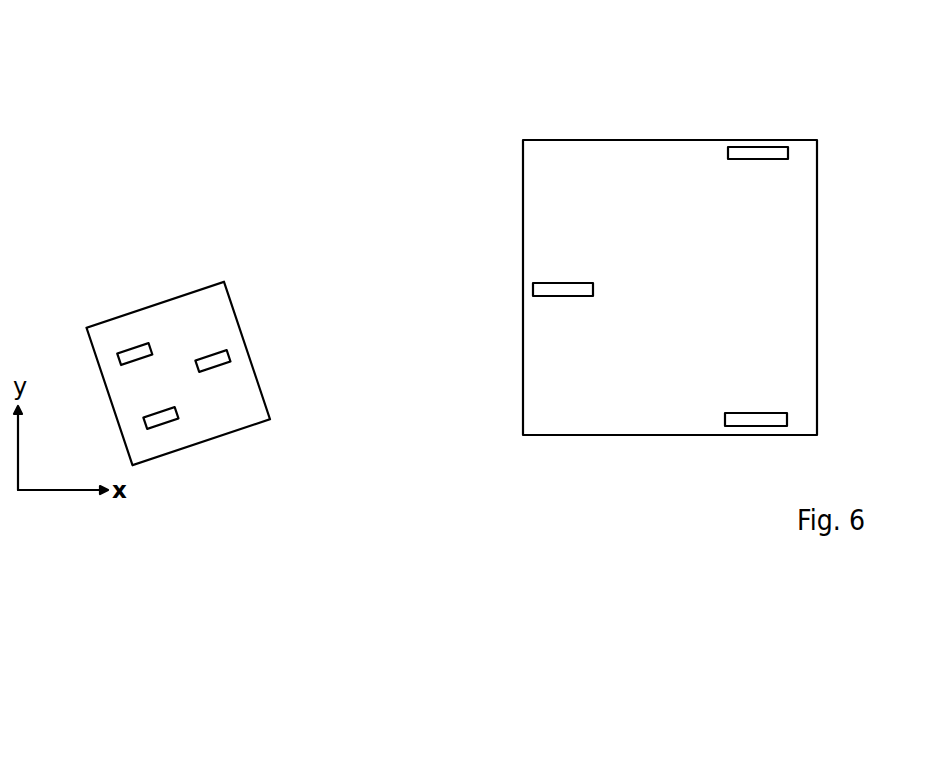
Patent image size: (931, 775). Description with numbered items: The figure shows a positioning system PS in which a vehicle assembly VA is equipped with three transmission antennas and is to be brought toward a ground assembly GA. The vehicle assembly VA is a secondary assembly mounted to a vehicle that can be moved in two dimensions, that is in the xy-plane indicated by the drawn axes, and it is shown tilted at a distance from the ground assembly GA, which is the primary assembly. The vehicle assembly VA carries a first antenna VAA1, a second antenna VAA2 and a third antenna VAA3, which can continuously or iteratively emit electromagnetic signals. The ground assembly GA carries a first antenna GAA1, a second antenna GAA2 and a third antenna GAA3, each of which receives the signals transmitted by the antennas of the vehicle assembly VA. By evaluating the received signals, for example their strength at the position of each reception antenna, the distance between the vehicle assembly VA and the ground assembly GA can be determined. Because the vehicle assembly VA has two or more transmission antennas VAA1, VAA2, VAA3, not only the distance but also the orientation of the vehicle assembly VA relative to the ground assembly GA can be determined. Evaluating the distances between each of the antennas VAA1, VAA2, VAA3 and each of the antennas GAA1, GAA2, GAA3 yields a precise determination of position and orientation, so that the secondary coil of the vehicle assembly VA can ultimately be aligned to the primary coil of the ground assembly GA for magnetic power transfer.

The positioning system PS is at (156, 85).
The vehicle assembly VA is at (267, 413).
The first antenna of the vehicle assembly VAA1 is at (125, 350).
The second antenna of the vehicle assembly VAA2 is at (245, 348).
The third antenna of the vehicle assembly VAA3 is at (160, 425).
The ground assembly GA is at (523, 415).
The first antenna of the ground assembly GAA1 is at (542, 282).
The second antenna of the ground assembly GAA2 is at (763, 159).
The third antenna of the ground assembly GAA3 is at (733, 412).